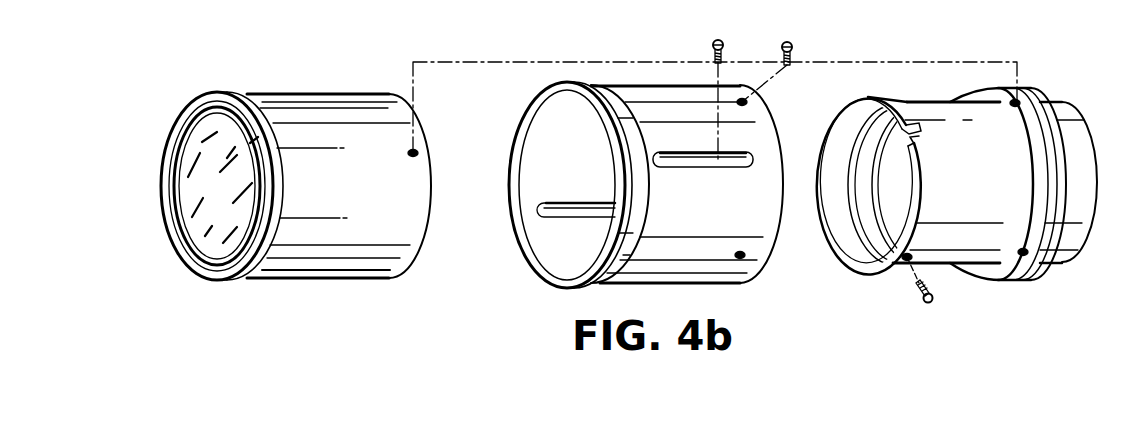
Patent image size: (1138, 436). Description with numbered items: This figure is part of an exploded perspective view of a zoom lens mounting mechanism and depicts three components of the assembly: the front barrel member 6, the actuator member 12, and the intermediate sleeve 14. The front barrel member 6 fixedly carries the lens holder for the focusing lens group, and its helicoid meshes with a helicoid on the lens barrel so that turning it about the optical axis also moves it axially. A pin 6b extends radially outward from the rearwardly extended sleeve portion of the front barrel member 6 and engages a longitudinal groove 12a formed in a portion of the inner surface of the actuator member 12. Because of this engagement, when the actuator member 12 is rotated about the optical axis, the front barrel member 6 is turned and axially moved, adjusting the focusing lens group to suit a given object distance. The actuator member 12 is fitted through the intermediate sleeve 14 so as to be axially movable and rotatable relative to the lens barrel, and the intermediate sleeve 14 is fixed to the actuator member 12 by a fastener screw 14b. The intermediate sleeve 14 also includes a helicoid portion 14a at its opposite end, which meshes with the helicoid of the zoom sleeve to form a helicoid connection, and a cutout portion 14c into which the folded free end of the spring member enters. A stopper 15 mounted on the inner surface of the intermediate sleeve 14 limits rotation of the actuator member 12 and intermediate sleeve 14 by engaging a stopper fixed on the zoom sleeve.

The front barrel member 6 is at (337, 113).
The pin 6b is at (723, 43).
The actuator member 12 is at (665, 111).
The longitudinal groove 12a is at (733, 163).
The intermediate sleeve 14 is at (933, 118).
The helicoid portion 14a is at (866, 232).
The fastener screw 14b is at (795, 43).
The cutout portion 14c is at (921, 131).
The stopper 15 is at (934, 296).